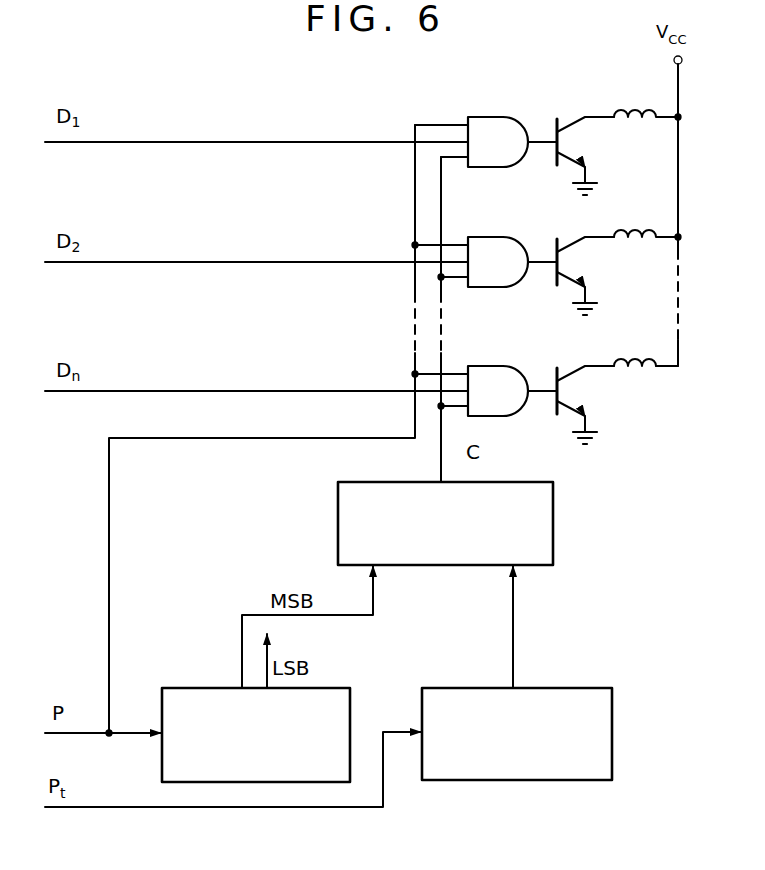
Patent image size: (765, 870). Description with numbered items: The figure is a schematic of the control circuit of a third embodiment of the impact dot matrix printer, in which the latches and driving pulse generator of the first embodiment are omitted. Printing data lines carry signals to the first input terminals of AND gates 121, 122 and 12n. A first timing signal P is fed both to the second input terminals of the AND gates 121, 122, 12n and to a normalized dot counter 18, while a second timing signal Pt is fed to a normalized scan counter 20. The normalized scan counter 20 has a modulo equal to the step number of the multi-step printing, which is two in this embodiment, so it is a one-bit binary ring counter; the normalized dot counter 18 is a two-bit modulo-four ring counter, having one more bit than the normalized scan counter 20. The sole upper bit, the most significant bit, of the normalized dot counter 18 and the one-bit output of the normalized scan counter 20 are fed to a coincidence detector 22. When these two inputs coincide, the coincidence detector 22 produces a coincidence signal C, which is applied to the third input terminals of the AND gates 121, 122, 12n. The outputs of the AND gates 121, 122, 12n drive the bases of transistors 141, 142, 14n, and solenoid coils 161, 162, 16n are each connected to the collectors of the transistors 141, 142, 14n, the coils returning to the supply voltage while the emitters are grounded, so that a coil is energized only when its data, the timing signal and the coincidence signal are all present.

The AND gate 121 is at (490, 117).
The AND gate 122 is at (490, 237).
The AND gate 12n is at (490, 366).
The transistor 141 is at (575, 143).
The transistor 142 is at (575, 263).
The transistor 14n is at (575, 392).
The solenoid coil 161 is at (630, 114).
The solenoid coil 162 is at (634, 230).
The solenoid coil 16n is at (634, 360).
The normalized dot counter 18 is at (351, 699).
The normalized scan counter 20 is at (613, 699).
The coincidence detector 22 is at (555, 515).